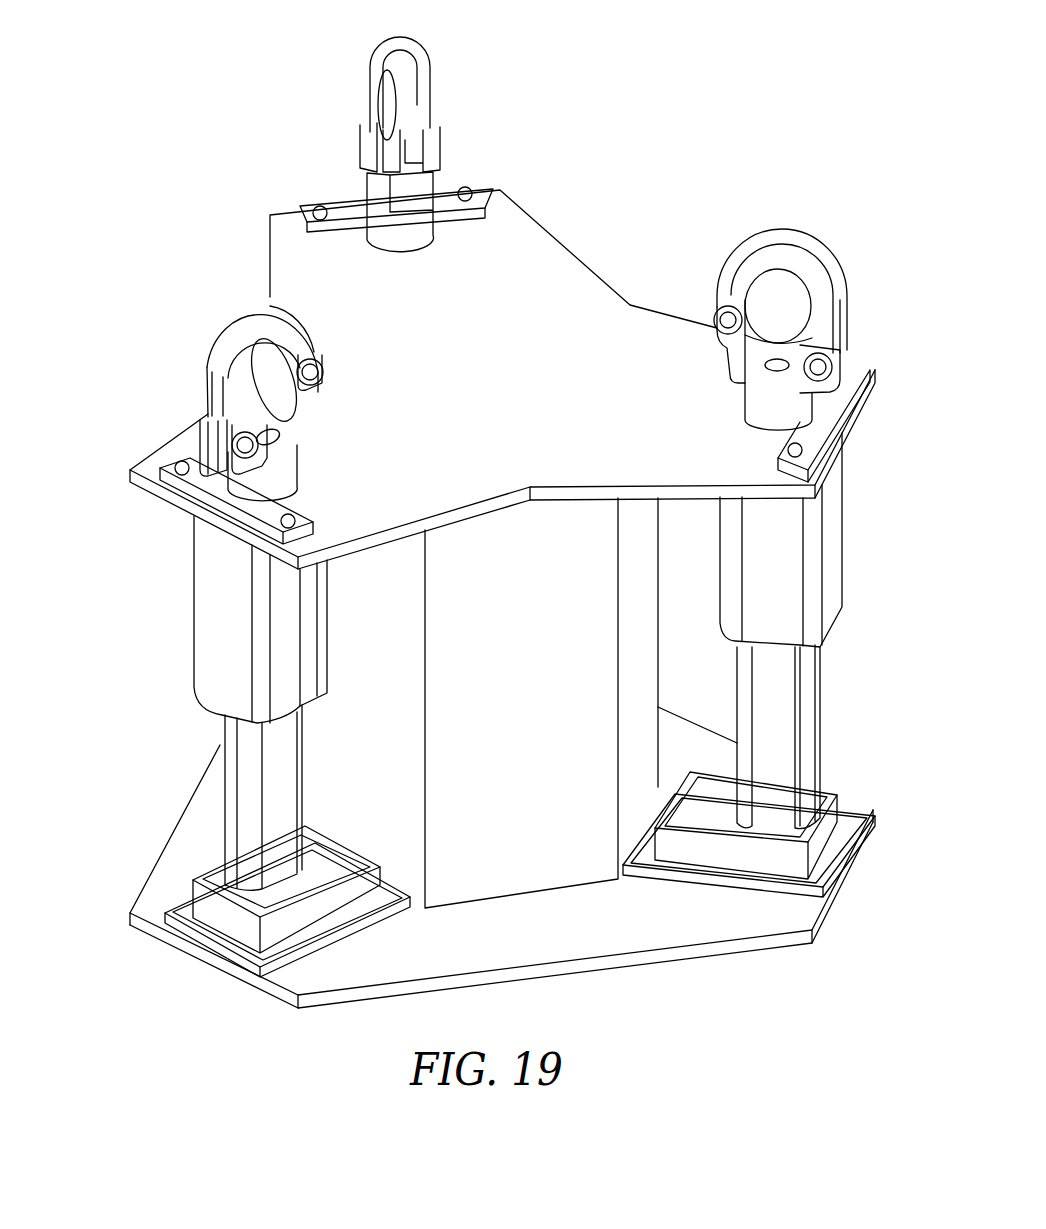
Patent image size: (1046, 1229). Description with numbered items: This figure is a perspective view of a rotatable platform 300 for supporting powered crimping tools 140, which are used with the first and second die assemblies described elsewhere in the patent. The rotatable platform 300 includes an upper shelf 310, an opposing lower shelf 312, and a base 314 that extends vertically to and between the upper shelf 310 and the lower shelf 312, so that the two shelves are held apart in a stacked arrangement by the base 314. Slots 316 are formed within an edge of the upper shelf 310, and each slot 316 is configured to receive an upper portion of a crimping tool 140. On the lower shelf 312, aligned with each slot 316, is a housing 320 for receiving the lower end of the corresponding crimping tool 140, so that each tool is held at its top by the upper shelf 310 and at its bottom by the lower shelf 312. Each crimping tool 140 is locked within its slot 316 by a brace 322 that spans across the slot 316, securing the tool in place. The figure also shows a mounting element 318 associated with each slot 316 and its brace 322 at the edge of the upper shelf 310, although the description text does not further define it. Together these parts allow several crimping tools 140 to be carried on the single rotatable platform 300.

The rotatable platform 300 is at (684, 121).
The upper shelf 310 is at (480, 419).
The lower shelf 312 is at (510, 943).
The base 314 is at (510, 695).
The slot 316 is at (214, 527).
The mounting bar 318 is at (128, 471).
The housing 320 is at (282, 968).
The brace 322 is at (448, 178).
The powered crimping tool 140 is at (205, 639).